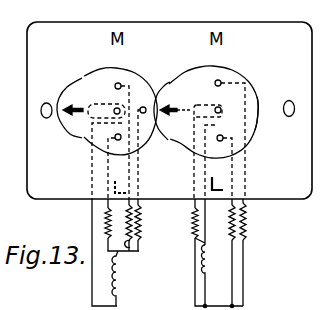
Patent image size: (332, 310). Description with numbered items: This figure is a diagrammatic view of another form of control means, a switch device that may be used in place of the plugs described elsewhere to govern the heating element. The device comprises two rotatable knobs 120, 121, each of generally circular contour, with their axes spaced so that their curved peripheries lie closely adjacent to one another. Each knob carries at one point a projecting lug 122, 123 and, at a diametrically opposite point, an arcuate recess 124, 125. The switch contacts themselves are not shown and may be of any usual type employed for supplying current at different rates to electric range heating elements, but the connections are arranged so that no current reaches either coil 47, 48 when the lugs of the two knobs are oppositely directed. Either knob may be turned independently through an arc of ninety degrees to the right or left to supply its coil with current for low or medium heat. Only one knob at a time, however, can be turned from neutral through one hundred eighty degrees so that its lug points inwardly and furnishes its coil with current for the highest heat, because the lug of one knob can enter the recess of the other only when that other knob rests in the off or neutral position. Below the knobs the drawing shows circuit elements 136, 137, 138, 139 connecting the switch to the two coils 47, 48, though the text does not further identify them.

The rotatable knob 120 is at (230, 82).
The rotatable knob 121 is at (98, 77).
The projecting lug 122 is at (172, 86).
The projecting lug 123 is at (64, 96).
The arcuate recess 124 is at (253, 97).
The arcuate recess 125 is at (139, 153).
The resistor 136 is at (107, 228).
The resistor 137 is at (119, 252).
The resistor 138 is at (243, 205).
The conductor 139 is at (92, 210).
The coil 47 is at (203, 258).
The coil 48 is at (108, 279).